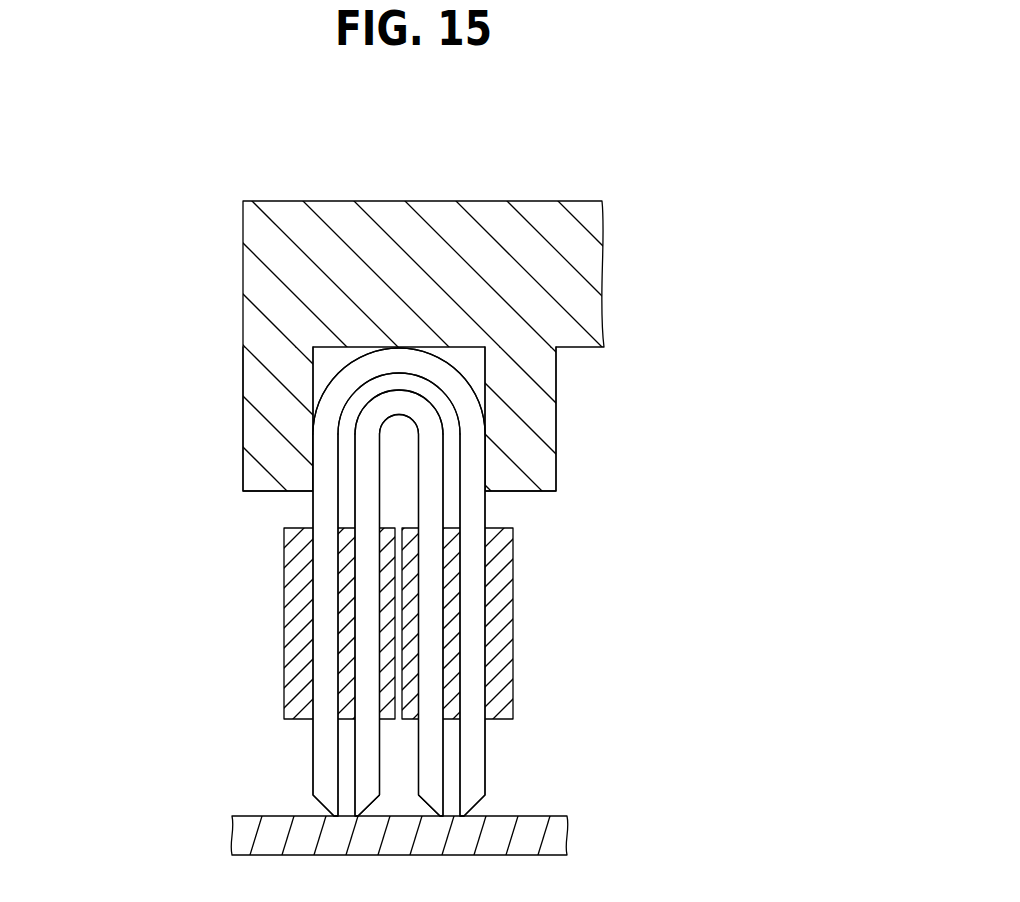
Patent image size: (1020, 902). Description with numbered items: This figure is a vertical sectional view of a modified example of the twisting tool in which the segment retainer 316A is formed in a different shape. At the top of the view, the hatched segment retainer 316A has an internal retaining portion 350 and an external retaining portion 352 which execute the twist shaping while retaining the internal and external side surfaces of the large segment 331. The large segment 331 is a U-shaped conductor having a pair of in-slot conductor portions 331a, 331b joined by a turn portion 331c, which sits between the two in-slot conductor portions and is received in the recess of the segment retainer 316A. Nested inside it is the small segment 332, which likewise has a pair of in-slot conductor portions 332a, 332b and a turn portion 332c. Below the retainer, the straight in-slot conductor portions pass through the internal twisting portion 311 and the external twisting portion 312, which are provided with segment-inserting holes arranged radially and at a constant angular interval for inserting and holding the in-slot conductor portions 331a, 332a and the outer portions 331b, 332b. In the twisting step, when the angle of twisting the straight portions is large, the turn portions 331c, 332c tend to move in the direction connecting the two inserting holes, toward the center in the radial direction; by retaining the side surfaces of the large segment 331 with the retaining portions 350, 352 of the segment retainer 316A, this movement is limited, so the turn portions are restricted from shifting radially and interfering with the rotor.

The segment retainer 316A is at (590, 225).
The internal retaining portion 350 is at (548, 415).
The external retaining portion 352 is at (252, 430).
The external twisting portion 312 is at (298, 612).
The internal twisting portion 311 is at (503, 643).
The large segment 331 is at (302, 750).
The in-slot conductor portion 331a is at (477, 522).
The in-slot conductor portion 331b is at (325, 522).
The turn portion 331c is at (378, 356).
The small segment 332 is at (387, 750).
The in-slot conductor portion 332a is at (435, 573).
The in-slot conductor portion 332b is at (367, 573).
The turn portion 332c is at (417, 402).